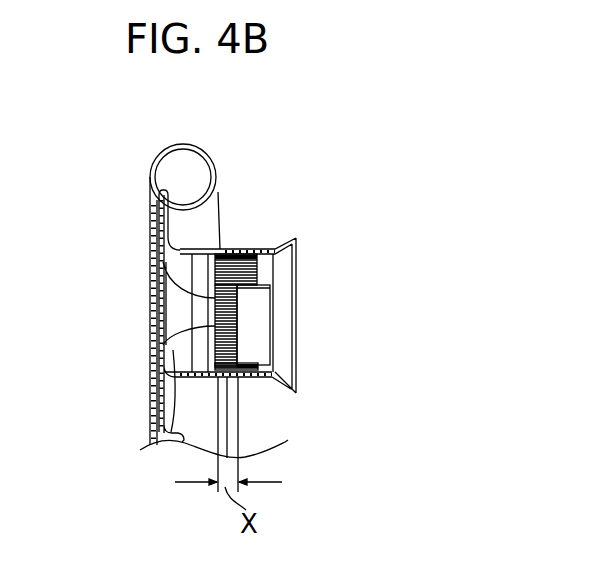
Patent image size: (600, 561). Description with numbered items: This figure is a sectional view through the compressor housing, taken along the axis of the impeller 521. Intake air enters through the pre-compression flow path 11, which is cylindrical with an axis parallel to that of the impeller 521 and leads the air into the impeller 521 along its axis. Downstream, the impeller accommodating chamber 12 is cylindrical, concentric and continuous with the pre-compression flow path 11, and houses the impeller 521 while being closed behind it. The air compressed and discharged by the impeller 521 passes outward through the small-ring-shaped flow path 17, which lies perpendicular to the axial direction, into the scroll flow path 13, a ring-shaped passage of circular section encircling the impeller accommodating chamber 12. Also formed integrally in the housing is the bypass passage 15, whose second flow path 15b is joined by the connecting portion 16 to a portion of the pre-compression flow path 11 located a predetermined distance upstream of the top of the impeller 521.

The scroll flow path 13 is at (171, 164).
The small-ring-shaped flow path 17 is at (150, 229).
The impeller 521 is at (175, 318).
The impeller accommodating chamber 12 is at (205, 262).
The pre-compression flow path 11 is at (290, 270).
The connecting portion 16 is at (272, 323).
The second flow path 15b is at (263, 408).
The bypass passage 15 is at (263, 422).